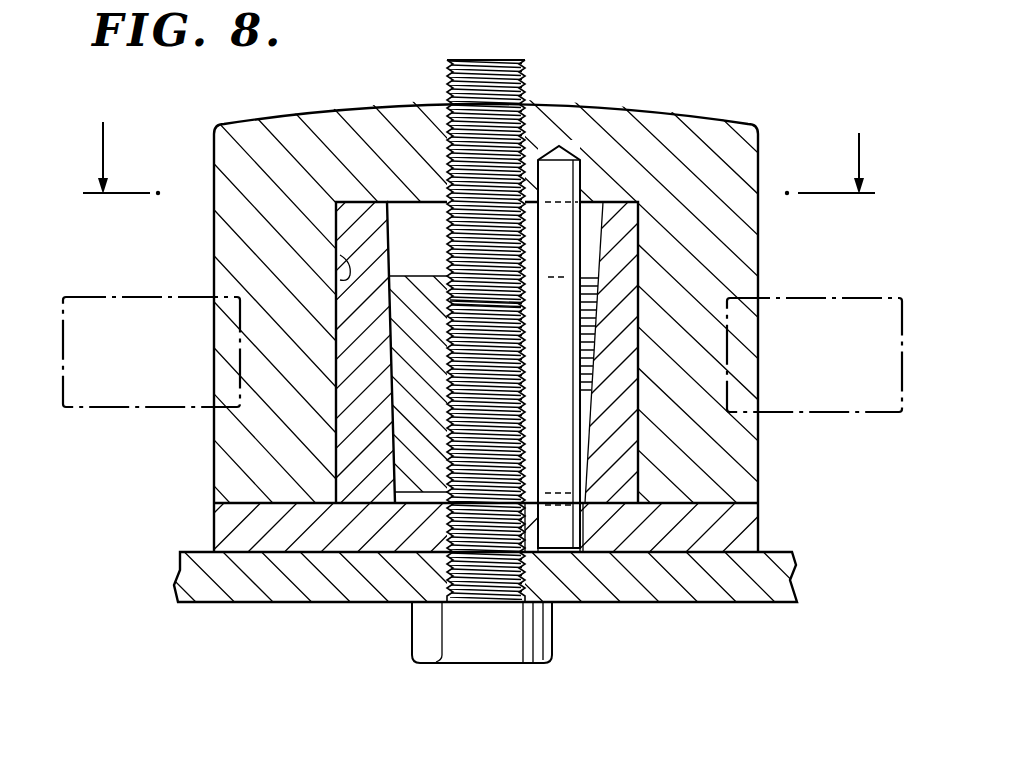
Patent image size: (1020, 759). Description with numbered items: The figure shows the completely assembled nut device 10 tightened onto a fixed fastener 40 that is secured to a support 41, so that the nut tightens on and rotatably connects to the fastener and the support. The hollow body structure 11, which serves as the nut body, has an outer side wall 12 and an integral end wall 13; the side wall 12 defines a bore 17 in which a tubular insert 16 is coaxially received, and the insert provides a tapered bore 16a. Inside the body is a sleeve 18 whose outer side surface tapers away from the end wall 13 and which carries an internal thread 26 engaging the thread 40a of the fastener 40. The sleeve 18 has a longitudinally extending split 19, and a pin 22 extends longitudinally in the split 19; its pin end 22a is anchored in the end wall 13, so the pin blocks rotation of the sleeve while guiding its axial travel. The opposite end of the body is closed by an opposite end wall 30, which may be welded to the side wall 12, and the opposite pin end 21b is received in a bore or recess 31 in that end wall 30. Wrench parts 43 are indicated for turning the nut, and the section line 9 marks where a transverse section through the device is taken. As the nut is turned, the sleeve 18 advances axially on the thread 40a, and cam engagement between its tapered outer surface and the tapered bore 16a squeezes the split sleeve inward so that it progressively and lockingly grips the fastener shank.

The nut device 10 is at (796, 114).
The hollow body structure 11 is at (206, 438).
The outer side wall 12 is at (745, 453).
The end wall 13 is at (660, 136).
The tubular insert 16 is at (331, 459).
The tapered bore 16a is at (399, 200).
The bore 17 is at (343, 267).
The sleeve 18 is at (386, 315).
The split 19 is at (586, 317).
The pin 22 is at (560, 257).
The pin end 22a is at (563, 175).
The internal thread 26 is at (445, 350).
The opposite end wall 30 is at (237, 534).
The bore or recess 31 is at (567, 548).
The fastener 40 is at (441, 507).
The thread 40a is at (481, 151).
The support 41 is at (283, 582).
The pin hole 21b is at (603, 530).
The wrench parts 43 is at (858, 298).
The section line 9- 9 is at (479, 158).